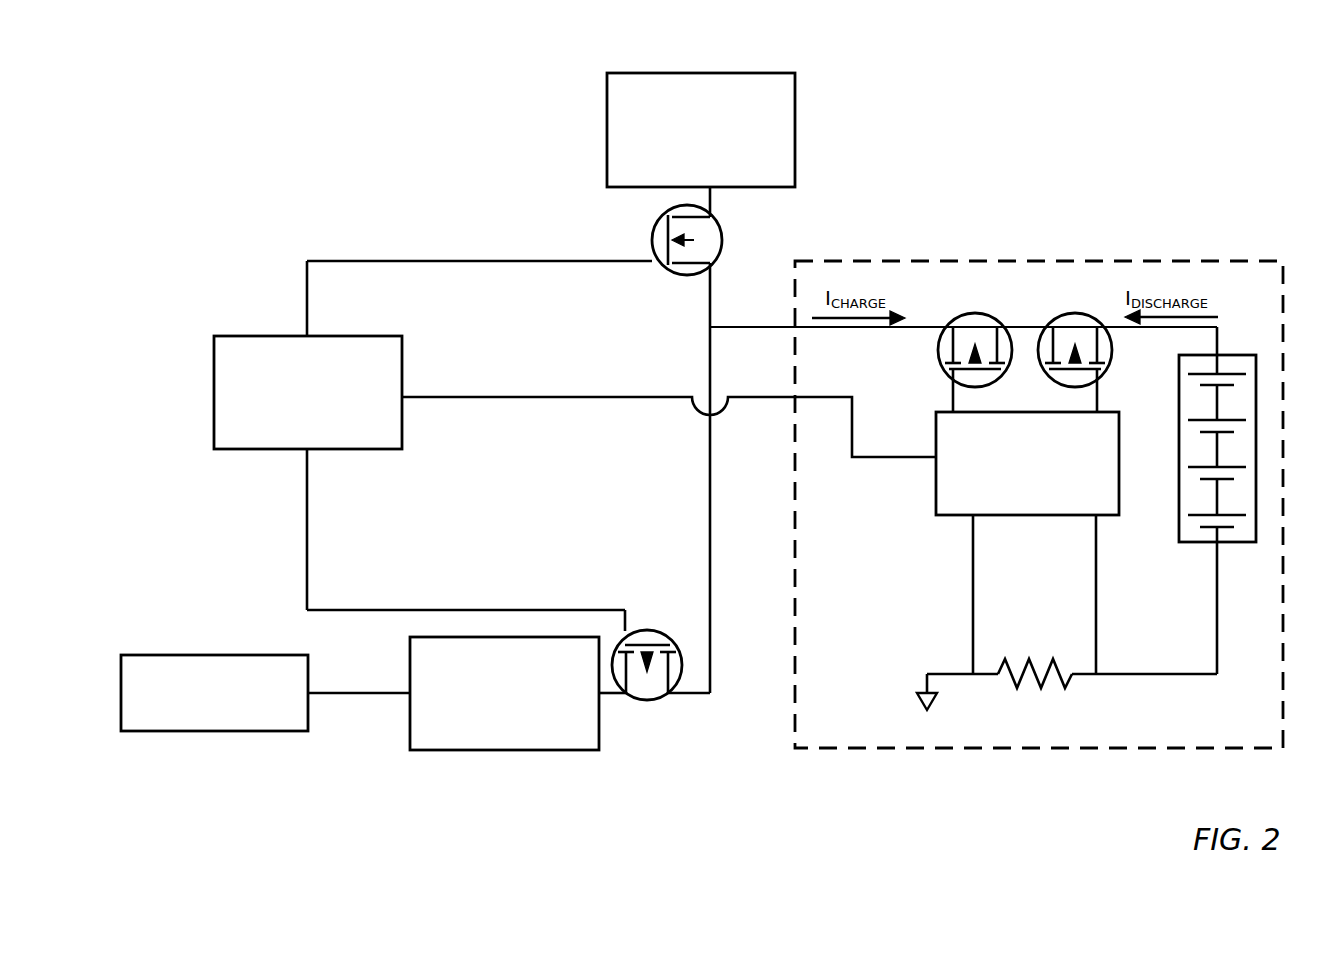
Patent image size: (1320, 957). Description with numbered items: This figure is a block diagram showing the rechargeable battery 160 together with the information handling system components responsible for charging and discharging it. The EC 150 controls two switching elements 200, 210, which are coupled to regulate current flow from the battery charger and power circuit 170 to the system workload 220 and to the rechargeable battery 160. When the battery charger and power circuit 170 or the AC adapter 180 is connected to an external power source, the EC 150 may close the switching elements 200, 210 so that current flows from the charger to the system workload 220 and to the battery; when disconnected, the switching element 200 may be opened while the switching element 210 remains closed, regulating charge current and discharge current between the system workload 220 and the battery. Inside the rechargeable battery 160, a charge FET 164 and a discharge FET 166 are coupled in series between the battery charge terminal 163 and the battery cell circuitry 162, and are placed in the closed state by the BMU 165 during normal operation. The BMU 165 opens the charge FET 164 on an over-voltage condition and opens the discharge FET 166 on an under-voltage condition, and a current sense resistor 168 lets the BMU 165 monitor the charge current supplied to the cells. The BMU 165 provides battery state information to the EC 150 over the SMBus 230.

The EC 150 is at (433, 446).
The rechargeable battery 160 is at (1039, 485).
The battery cell circuitry 162 is at (1185, 514).
The battery charge terminal 163 is at (963, 321).
The charge FET 164 is at (961, 344).
The BMU 165 is at (1027, 543).
The discharge FET 166 is at (1061, 344).
The current sense resistor 168 is at (1062, 697).
The battery charger and power circuit 170 is at (518, 693).
The AC adapter 180 is at (265, 693).
The switching element 200 is at (676, 685).
The switching element 210 is at (732, 240).
The system workload 220 is at (701, 145).
The SMBus 230 is at (669, 407).